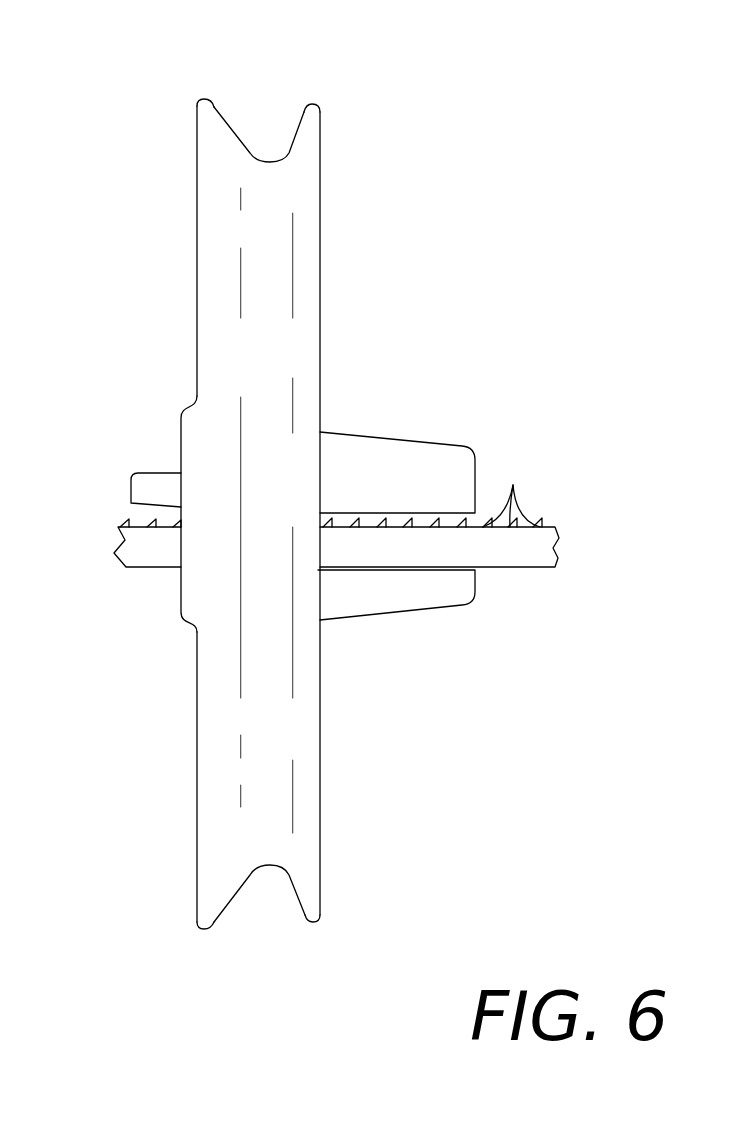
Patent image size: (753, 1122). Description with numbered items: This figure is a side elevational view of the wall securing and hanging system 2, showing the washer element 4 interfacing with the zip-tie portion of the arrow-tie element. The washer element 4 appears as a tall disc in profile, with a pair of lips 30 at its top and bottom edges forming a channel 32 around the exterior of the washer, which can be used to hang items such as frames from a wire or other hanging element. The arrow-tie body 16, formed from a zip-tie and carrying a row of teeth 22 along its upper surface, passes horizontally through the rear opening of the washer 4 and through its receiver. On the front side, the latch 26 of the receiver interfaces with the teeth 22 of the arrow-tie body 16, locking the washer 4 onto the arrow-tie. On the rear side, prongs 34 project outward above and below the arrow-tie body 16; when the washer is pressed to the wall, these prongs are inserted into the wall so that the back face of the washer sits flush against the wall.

The wall securing and hanging system 2 is at (558, 223).
The washer element 4 is at (171, 231).
The arrow-tie body 16 is at (101, 525).
The teeth 22 is at (512, 489).
The latch 26 is at (160, 485).
The lips 30 is at (200, 103).
The channel 32 is at (270, 113).
The prongs 34 is at (433, 457).